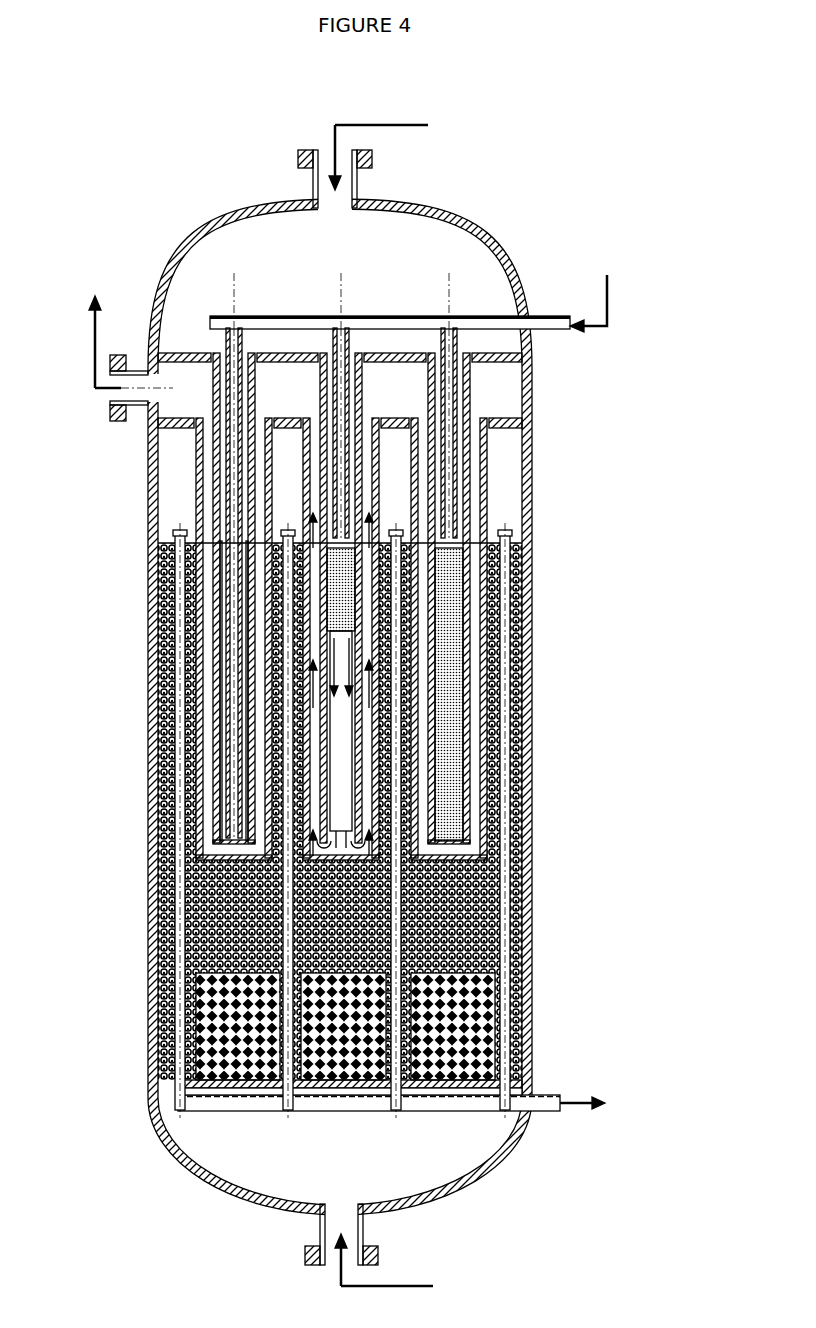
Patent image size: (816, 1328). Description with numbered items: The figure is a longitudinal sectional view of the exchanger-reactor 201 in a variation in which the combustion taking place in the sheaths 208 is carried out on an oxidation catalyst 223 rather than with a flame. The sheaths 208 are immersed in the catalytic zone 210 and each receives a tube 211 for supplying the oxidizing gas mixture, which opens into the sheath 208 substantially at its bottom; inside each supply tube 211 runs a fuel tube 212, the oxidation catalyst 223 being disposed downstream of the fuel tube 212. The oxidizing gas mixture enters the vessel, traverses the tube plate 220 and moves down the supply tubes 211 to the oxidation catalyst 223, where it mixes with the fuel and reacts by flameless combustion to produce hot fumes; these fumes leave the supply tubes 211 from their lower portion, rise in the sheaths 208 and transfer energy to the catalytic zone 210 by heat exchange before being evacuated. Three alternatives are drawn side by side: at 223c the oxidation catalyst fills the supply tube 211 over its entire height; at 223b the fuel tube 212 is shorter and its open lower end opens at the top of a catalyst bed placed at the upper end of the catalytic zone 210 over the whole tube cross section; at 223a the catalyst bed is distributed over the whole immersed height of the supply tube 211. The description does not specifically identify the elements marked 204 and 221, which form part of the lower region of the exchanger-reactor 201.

The exchanger-reactor 201 is at (543, 444).
The catalyst support grid / inert bed 204 is at (460, 1068).
The sheath 208 is at (493, 752).
The catalytic zone 210 is at (495, 895).
The tube for supplying oxidizing gas mixture 211 is at (520, 550).
The fuel tube 212 is at (217, 475).
The tube plate 220 is at (513, 361).
The lower plate / outlet chamber 221 is at (160, 428).
The oxidation catalyst 223 is at (440, 653).
The embodiment with oxidation catalyst over whole immersed height 223a is at (440, 613).
The embodiment with oxidation catalyst bed at upper end 223b is at (340, 580).
The embodiment with catalyst over entire tube height 223c is at (220, 610).